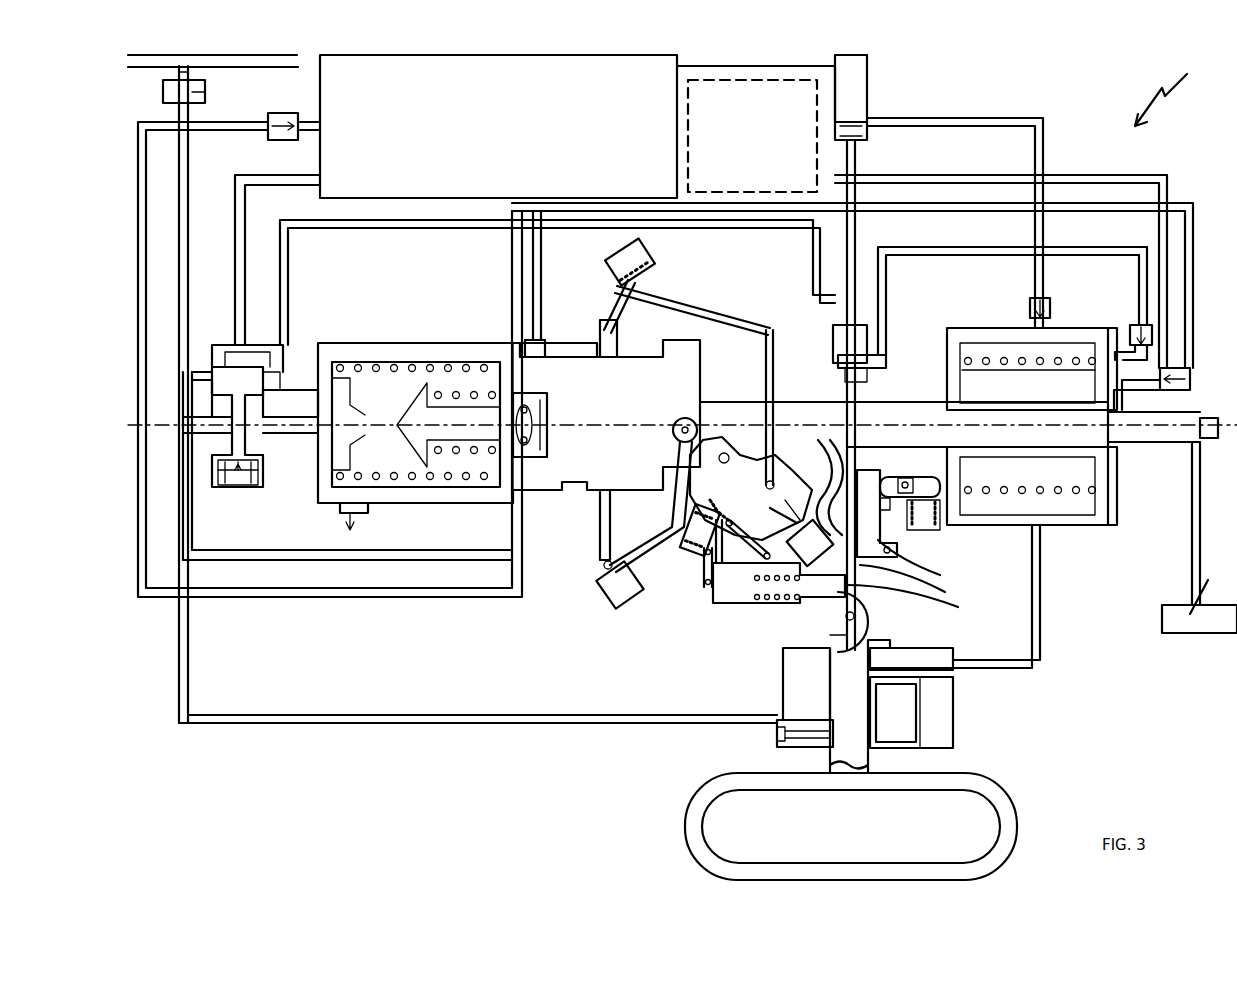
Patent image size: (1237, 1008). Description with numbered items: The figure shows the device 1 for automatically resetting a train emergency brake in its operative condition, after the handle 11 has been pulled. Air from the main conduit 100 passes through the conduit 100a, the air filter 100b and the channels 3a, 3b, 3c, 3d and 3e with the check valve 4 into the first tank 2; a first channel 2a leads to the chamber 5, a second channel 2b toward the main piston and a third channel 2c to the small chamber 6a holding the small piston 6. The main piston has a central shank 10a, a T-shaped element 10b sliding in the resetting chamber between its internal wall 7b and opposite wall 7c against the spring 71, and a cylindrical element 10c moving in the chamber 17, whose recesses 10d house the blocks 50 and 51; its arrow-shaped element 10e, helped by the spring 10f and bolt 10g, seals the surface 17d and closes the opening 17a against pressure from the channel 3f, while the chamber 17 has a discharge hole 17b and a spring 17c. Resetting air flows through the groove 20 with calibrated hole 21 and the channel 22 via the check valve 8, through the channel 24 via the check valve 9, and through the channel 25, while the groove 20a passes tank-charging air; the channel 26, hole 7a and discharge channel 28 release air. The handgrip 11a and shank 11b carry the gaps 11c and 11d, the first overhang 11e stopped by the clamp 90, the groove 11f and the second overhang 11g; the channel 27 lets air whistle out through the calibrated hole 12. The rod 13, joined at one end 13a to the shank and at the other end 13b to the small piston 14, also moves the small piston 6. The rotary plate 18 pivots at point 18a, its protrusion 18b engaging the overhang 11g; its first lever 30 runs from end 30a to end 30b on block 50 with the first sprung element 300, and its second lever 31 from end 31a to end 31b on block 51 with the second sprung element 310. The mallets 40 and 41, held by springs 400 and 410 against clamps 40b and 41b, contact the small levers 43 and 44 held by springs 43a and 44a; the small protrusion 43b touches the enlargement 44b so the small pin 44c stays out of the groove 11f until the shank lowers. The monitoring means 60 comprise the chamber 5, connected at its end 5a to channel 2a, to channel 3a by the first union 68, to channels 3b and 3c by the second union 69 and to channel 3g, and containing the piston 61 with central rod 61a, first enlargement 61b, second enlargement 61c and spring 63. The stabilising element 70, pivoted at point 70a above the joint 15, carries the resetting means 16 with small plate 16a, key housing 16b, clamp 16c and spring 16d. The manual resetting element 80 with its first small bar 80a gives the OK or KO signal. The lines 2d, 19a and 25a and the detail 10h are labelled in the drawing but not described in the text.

The device for automatically resetting the emergency brake 1 is at (1167, 92).
The first tank 2 is at (404, 110).
The first channel 2a is at (762, 156).
The second channel 2b is at (512, 265).
The third channel 2c is at (745, 67).
The conduit 2d is at (240, 205).
The channel 3a is at (189, 158).
The channel 3b is at (183, 394).
The channel 3c is at (184, 540).
The channel 3d is at (288, 560).
The channel 3e is at (325, 597).
The channel 3f is at (295, 433).
The channel 3g is at (288, 262).
The check valve 4 is at (283, 140).
The chamber 5 is at (280, 348).
The end of the chamber 5a is at (248, 345).
The small piston 6 is at (867, 132).
The small chamber 6a is at (870, 95).
The hole 7a is at (1040, 525).
The internal wall 7b is at (950, 340).
The opposite wall 7c is at (1117, 480).
The check valve 8 is at (1190, 386).
The check valve 9 is at (1050, 308).
The central shank 10a is at (914, 402).
The T-shaped element 10b is at (1095, 372).
The cylindrical element 10c is at (632, 418).
The recesses 10d is at (664, 476).
The housing notch 10h is at (684, 346).
The arrow-shaped element 10e is at (468, 455).
The spring 10f is at (463, 395).
The bolt 10g is at (548, 400).
The handle 11 is at (1000, 790).
The handgrip 11a is at (865, 870).
The shank 11b is at (783, 692).
The gap 11c is at (830, 760).
The gap 11d is at (890, 748).
The first overhang 11e is at (890, 643).
The groove 11f is at (830, 635).
The second overhang 11g is at (842, 487).
The calibrated hole 12 is at (777, 735).
The rod 13 is at (855, 232).
The end of the rod 13a is at (845, 618).
The end of the rod 13b is at (867, 380).
The small piston 14 is at (886, 360).
The joint 15 is at (868, 622).
The resetting means 16 is at (905, 530).
The small plate 16a is at (888, 477).
The housing for a key 16b is at (912, 478).
The clamp 16c is at (888, 510).
The spring 16d is at (940, 520).
The chamber 17 is at (428, 378).
The opening 17a is at (340, 410).
The discharge hole 17b is at (342, 513).
The spring 17c is at (378, 362).
The surface 17d is at (410, 470).
The rotary plate 18 is at (766, 513).
The point 18a is at (724, 452).
The protrusion 18b is at (806, 510).
The housing 19a is at (833, 330).
The groove 20 is at (558, 357).
The groove 20a is at (575, 540).
The calibrated hole 21 is at (540, 340).
The channel 22 is at (950, 211).
The channel 24 is at (965, 118).
The channel 25 is at (1070, 248).
The valve 25a is at (1136, 325).
The channel 26 is at (1040, 606).
The channel 27 is at (189, 672).
The discharge channel 28 is at (953, 722).
The first lever 30 is at (705, 305).
The end of the first lever 30a is at (773, 470).
The end of the first lever 30b is at (612, 312).
The second lever 31 is at (640, 545).
The end of the second lever 31a is at (674, 436).
The end of the second lever 31b is at (604, 562).
The first mallet 40 is at (690, 555).
The clamp 40b is at (719, 489).
The second mallet 41 is at (750, 540).
The clamp 41b is at (724, 558).
The small lever 43 is at (795, 532).
The spring 43a is at (829, 480).
The small protrusion 43b is at (914, 582).
The small lever 44 is at (740, 595).
The spring 44a is at (768, 606).
The enlargement 44b is at (800, 606).
The small pin 44c is at (913, 600).
The block 50 is at (617, 336).
The block 51 is at (600, 528).
The monitoring means 60 is at (225, 338).
The piston 61 is at (240, 487).
The central rod 61a is at (248, 410).
The first enlargement 61b is at (265, 385).
The second enlargement 61c is at (255, 455).
The spring 63 is at (252, 487).
The first union 68 is at (198, 372).
The second union 69 is at (197, 433).
The stabilising element 70 is at (864, 470).
The point 70a is at (920, 561).
The spring 71 is at (984, 340).
The manual resetting element 80 is at (1190, 418).
The first small bar 80a is at (1200, 560).
The clamp 90 is at (953, 655).
The main conduit 100 is at (228, 68).
The conduit 100a is at (178, 72).
The air filter 100b is at (208, 94).
The first sprung element 300 is at (652, 268).
The second sprung element 310 is at (605, 606).
The spring 400 is at (722, 505).
The spring 410 is at (704, 580).